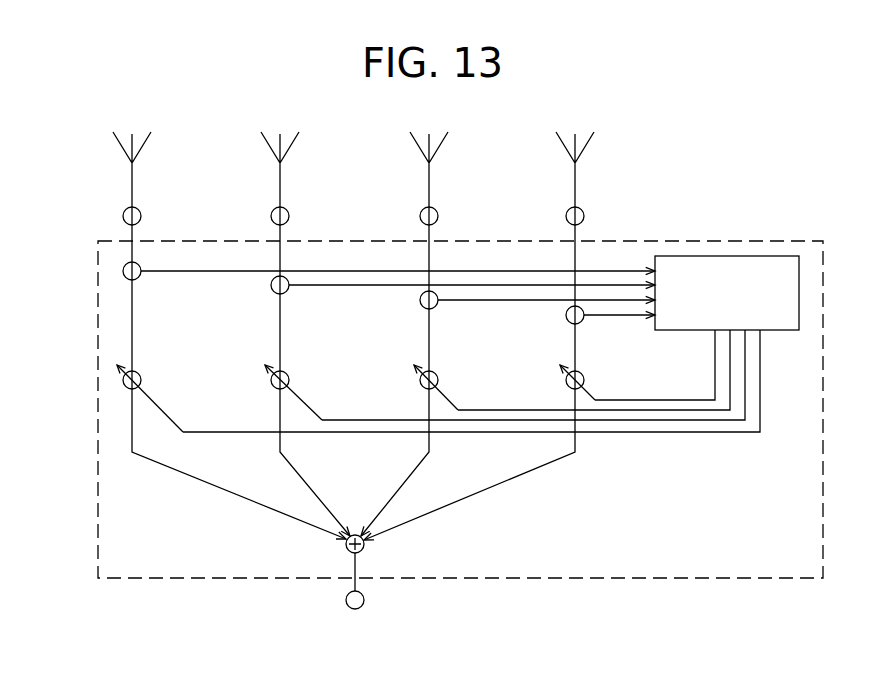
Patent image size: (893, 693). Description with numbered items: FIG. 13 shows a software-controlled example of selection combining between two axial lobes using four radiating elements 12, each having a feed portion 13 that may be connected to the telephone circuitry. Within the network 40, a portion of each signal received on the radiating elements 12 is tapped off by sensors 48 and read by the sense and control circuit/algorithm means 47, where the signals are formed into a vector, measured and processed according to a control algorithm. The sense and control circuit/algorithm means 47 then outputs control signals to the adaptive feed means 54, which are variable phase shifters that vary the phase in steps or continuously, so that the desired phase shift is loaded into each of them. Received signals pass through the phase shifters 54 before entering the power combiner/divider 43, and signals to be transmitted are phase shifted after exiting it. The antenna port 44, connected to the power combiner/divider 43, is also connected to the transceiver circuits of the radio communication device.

The radiating element 12 is at (559, 138).
The feed portion 13 is at (141, 216).
The beamforming network 40 is at (98, 262).
The sense and control circuit/algorithm means 47 is at (727, 256).
The sensor 48 is at (139, 278).
The adaptive feed means 54 is at (141, 376).
The power combiner/divider 43 is at (364, 548).
The antenna port 44 is at (364, 600).